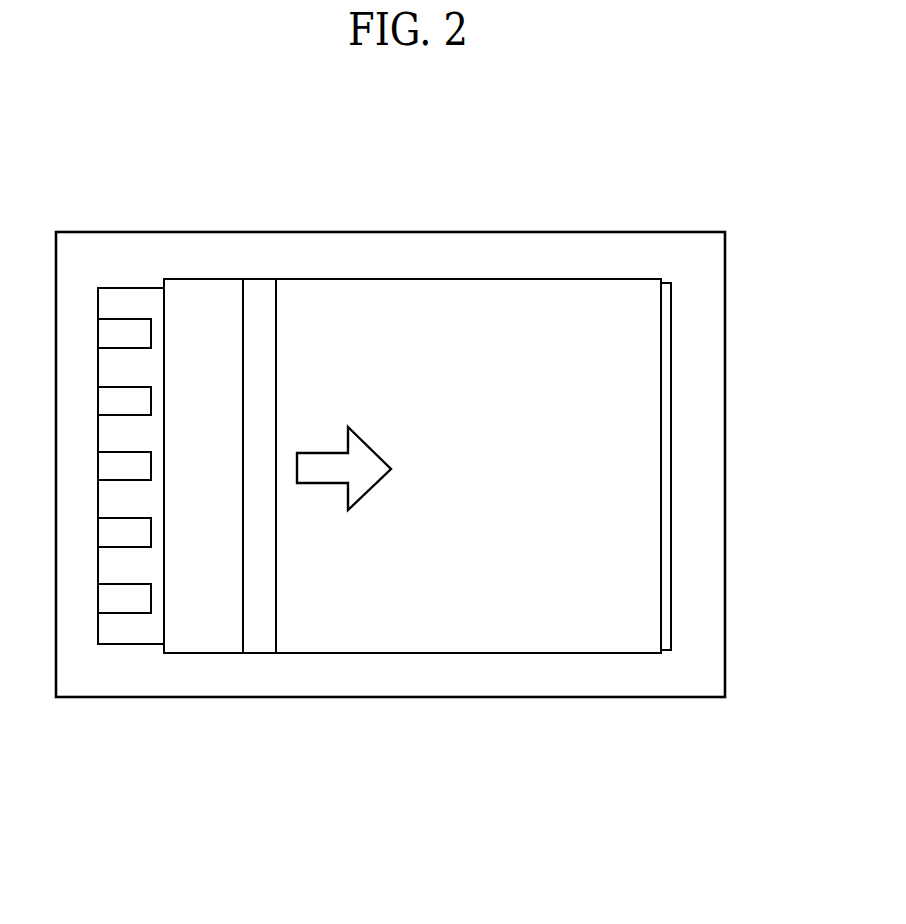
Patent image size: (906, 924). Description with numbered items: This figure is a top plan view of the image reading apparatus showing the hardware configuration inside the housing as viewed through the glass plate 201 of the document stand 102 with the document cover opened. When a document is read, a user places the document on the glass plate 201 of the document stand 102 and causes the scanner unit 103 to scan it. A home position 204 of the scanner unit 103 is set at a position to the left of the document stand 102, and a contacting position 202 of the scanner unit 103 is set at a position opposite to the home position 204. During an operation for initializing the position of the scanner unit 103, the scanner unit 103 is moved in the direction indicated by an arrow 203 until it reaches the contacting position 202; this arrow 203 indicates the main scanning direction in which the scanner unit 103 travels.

The document stand 102 is at (424, 250).
The scanner unit 103 is at (261, 285).
The glass plate 201 is at (557, 295).
The contacting position 202 is at (666, 394).
The arrow 203 is at (317, 475).
The home position 204 is at (164, 653).